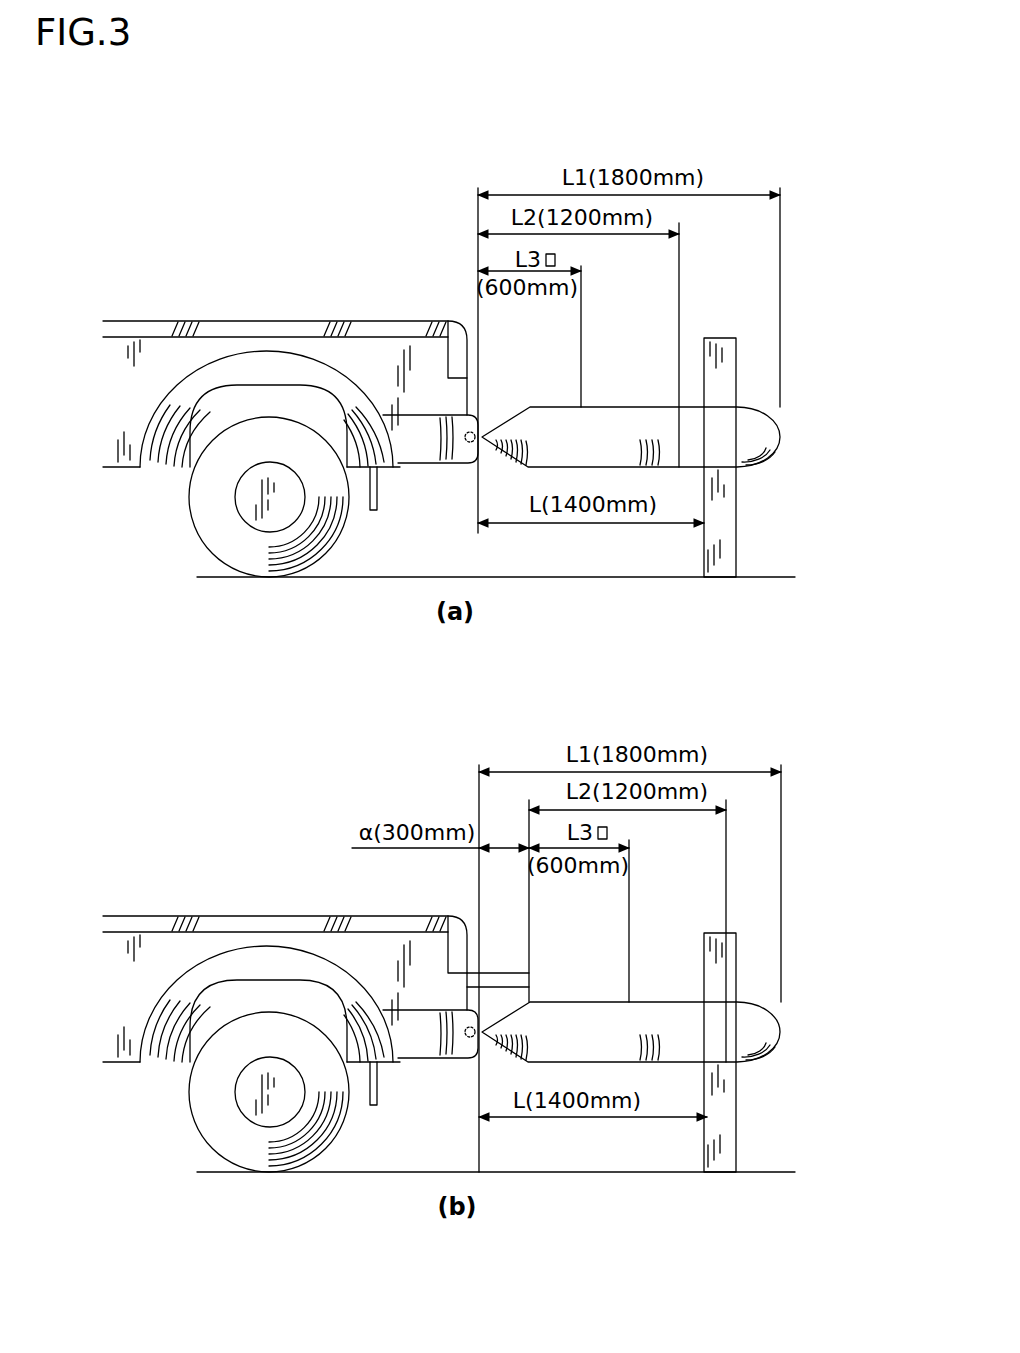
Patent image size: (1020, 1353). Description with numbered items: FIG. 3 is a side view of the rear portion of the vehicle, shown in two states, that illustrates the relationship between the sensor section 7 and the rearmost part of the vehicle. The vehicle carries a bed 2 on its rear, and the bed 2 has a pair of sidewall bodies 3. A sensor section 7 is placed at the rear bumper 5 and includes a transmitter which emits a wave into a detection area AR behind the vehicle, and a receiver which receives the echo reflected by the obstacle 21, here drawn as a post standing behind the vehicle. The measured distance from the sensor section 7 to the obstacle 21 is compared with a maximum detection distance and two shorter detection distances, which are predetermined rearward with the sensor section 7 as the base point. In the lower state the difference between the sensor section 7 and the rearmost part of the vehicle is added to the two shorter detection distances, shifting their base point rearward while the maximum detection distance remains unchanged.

The bed 2 is at (263, 311).
The sidewall body 3 is at (378, 351).
The rear bumper 5 is at (430, 444).
The sensor section 7 is at (467, 449).
The obstacle 21 is at (725, 498).
The detection area AR is at (772, 452).